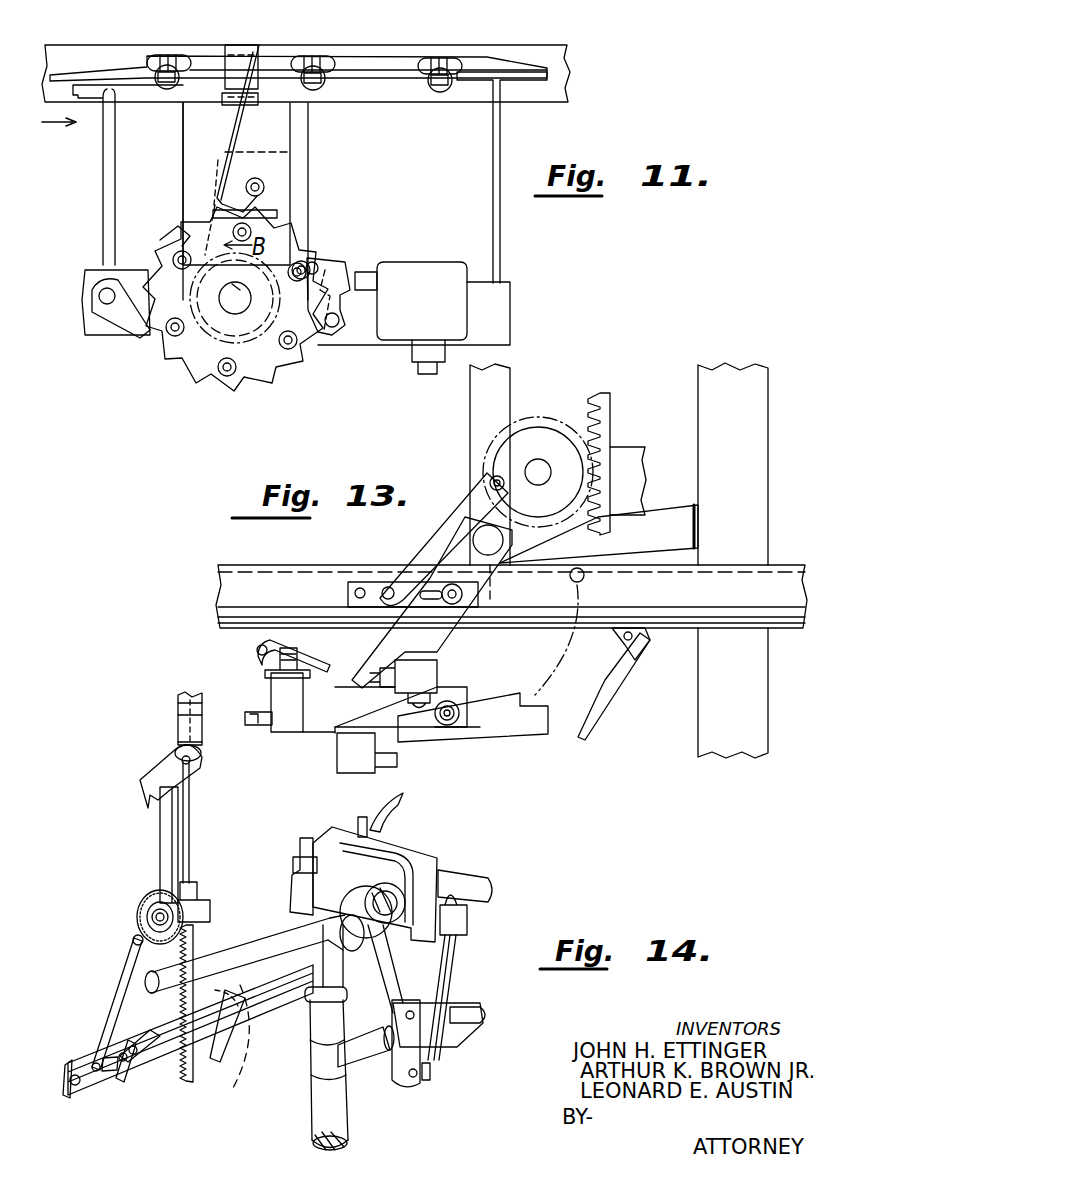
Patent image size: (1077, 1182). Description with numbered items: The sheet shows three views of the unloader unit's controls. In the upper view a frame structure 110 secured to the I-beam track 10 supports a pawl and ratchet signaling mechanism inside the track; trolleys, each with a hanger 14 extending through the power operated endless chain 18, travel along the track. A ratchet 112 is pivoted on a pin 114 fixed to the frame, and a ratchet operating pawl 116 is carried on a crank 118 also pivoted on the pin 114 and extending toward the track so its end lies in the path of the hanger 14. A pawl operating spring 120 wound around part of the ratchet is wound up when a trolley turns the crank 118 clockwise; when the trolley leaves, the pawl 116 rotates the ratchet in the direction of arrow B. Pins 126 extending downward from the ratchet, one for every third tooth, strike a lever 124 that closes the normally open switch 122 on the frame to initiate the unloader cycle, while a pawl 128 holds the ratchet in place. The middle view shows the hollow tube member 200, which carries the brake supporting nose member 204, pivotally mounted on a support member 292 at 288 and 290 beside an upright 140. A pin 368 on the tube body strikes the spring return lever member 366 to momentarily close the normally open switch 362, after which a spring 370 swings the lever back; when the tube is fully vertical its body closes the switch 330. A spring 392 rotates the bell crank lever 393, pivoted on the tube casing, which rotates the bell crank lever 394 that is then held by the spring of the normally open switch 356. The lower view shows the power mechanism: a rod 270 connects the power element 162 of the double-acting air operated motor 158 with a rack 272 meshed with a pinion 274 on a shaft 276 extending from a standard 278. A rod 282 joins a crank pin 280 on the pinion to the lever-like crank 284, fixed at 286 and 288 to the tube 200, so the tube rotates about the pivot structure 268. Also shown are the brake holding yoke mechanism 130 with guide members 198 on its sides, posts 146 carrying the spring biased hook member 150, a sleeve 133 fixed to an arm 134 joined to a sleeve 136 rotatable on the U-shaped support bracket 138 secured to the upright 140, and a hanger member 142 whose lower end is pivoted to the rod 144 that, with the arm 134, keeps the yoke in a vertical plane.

In FIG. 11, the I-beam track 10 is at (112, 46).
In FIG. 11, the hanger 14 is at (256, 47).
In FIG. 11, the endless chain 18 is at (348, 56).
In FIG. 11, the frame structure 110 is at (192, 115).
In FIG. 11, the ratchet 112 is at (182, 364).
In FIG. 11, the pin 114 is at (240, 306).
In FIG. 11, the ratchet operating pawl 116 is at (218, 192).
In FIG. 11, the crank 118 is at (285, 124).
In FIG. 11, the pawl operating spring 120 is at (176, 226).
In FIG. 11, the normally open switch 122 is at (410, 268).
In FIG. 11, the switch operating lever 124 is at (330, 270).
In FIG. 11, the pins 126 is at (175, 258).
In FIG. 11, the pawl 128 is at (130, 320).
In FIG. 14, the yoke mechanism 130 is at (440, 868).
In FIG. 14, the sleeve 133 is at (488, 893).
In FIG. 14, the arm 134 is at (455, 960).
In FIG. 14, the sleeve 136 is at (478, 1035).
In FIG. 14, the U-shaped support bracket 138 is at (488, 1015).
In FIG. 13, the upright 140 is at (765, 530).
In FIG. 14, the upright 140 is at (345, 1125).
In FIG. 14, the hanger member 142 is at (400, 1085).
In FIG. 14, the rod 144 is at (432, 1072).
In FIG. 14, the posts 146 is at (355, 825).
In FIG. 14, the hook member 150 is at (372, 818).
In FIG. 14, the double-acting air operated motor 158 is at (176, 727).
In FIG. 14, the power element 162 is at (180, 698).
In FIG. 14, the guide members 198 is at (290, 875).
In FIG. 13, the tube member 200 is at (322, 572).
In FIG. 14, the tube member 200 is at (75, 1065).
In FIG. 14, the nose member 204 is at (390, 893).
In FIG. 14, the pivot structure 268 is at (158, 1062).
In FIG. 14, the rod 270 is at (200, 795).
In FIG. 13, the rack 272 is at (606, 408).
In FIG. 14, the rack 272 is at (198, 935).
In FIG. 13, the pinion 274 is at (545, 428).
In FIG. 14, the pinion 274 is at (150, 897).
In FIG. 14, the shaft 276 is at (150, 917).
In FIG. 13, the standard 278 is at (505, 378).
In FIG. 14, the standard 278 is at (158, 817).
In FIG. 13, the crank pin 280 is at (492, 478).
In FIG. 14, the crank pin 280 is at (133, 941).
In FIG. 13, the rod 282 is at (448, 520).
In FIG. 14, the rod 282 is at (128, 965).
In FIG. 13, the lever like crank 284 is at (374, 585).
In FIG. 14, the lever like crank 284 is at (110, 1075).
In FIG. 13, the connection 286 is at (356, 598).
In FIG. 14, the connection 286 is at (70, 1078).
In FIG. 14, the connection 288 is at (125, 1078).
In FIG. 14, the pivot mounting 290 is at (245, 1015).
In FIG. 13, the support member 292 is at (640, 522).
In FIG. 14, the support member 292 is at (208, 982).
In FIG. 13, the switch 330 is at (383, 763).
In FIG. 13, the normally open switch 356 is at (268, 672).
In FIG. 13, the normally open switch 362 is at (425, 690).
In FIG. 13, the spring return lever member 366 is at (515, 735).
In FIG. 13, the pin 368 is at (584, 578).
In FIG. 13, the spring 370 is at (445, 727).
In FIG. 13, the spring 392 is at (635, 652).
In FIG. 13, the bell crank lever 393 is at (604, 690).
In FIG. 13, the bell crank lever 394 is at (318, 668).